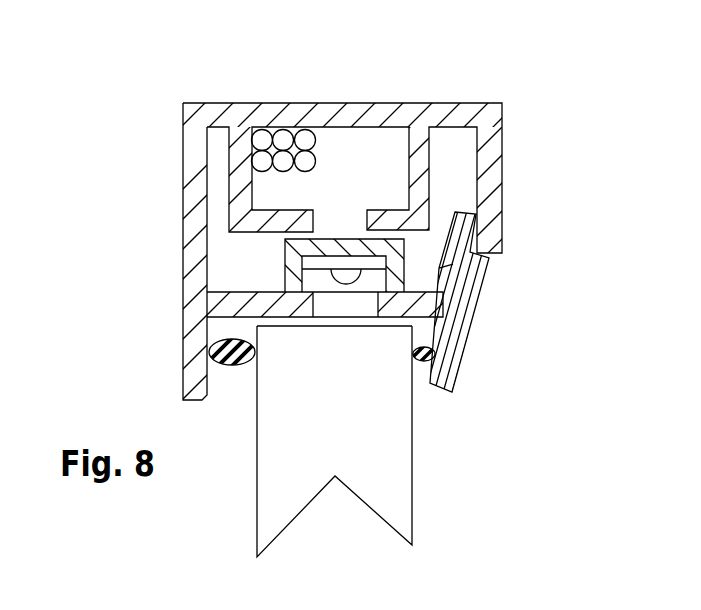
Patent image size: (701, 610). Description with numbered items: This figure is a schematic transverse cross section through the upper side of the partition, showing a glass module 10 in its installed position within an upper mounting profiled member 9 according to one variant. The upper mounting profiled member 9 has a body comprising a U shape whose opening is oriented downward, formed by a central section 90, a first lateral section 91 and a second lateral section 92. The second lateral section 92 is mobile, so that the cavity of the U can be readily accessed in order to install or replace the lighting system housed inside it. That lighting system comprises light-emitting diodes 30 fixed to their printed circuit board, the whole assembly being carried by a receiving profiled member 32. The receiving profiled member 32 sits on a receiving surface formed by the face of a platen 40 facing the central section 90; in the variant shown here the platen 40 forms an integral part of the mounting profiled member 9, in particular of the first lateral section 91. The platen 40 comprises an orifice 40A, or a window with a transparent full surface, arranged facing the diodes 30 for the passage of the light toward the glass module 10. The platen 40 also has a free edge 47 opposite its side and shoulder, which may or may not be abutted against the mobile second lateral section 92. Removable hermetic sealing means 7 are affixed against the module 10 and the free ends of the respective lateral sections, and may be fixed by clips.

The upper mounting profiled member 9 is at (138, 96).
The central section 90 is at (331, 113).
The first lateral section 91 is at (183, 165).
The second lateral section 92 is at (478, 277).
The receiving profiled member 32 is at (293, 270).
The light-emitting diodes 30 is at (348, 279).
The orifice 40A is at (328, 307).
The platen 40 is at (428, 316).
The free edge 47 is at (445, 316).
The hermetic sealing means 7 is at (233, 365).
The module 10 is at (390, 477).